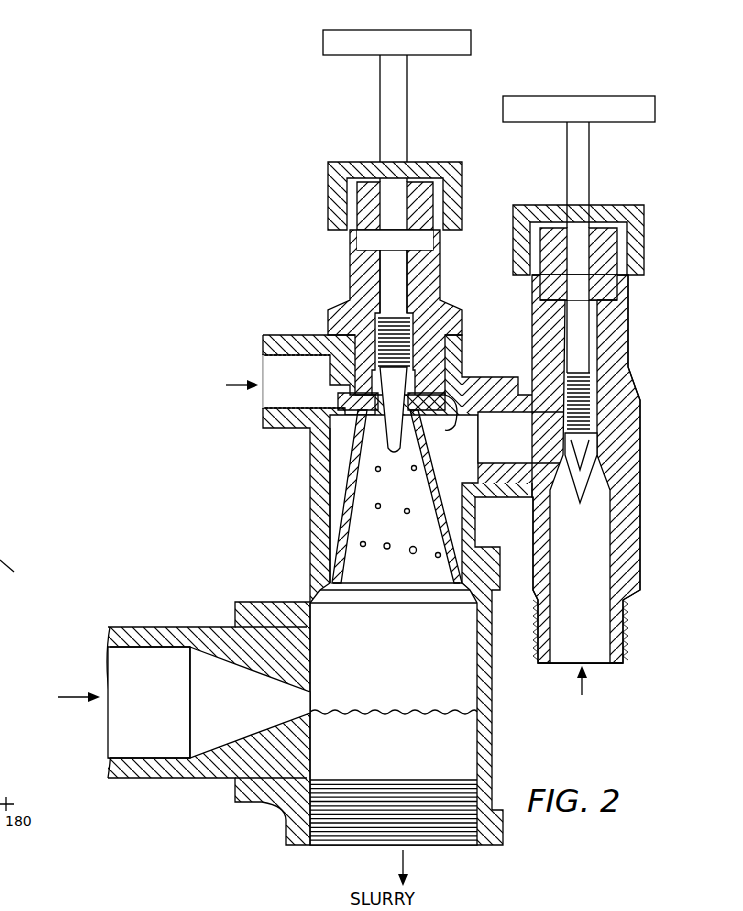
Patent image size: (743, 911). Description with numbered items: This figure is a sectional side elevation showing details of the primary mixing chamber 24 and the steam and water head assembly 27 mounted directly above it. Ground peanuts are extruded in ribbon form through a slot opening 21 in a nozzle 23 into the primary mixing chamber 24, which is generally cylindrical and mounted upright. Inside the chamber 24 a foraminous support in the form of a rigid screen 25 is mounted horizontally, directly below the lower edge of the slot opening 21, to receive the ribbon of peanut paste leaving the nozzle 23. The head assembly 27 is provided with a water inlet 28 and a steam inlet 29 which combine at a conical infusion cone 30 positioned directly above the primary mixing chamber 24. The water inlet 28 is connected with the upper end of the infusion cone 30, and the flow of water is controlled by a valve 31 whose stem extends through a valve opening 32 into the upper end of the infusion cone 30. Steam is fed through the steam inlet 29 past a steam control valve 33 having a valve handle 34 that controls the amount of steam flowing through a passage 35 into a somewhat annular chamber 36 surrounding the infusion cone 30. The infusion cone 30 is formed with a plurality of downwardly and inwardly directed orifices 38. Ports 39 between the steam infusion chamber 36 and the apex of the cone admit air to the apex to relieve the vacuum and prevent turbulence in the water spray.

The slot opening 21 is at (310, 700).
The nozzle 23 is at (312, 754).
The primary mixing chamber 24 is at (404, 661).
The rigid screen 25 is at (452, 711).
The steam and water head assembly 27 is at (284, 478).
The water inlet 28 is at (277, 334).
The steam inlet 29 is at (620, 668).
The infusion cone 30 is at (352, 520).
The valve 31 is at (380, 106).
The valve opening 32 is at (440, 266).
The steam control valve 33 is at (640, 434).
The valve handle 34 is at (658, 116).
The passage 35 is at (529, 449).
The annular chamber 36 is at (328, 500).
The orifices 38 is at (343, 548).
The ports 39 is at (455, 400).